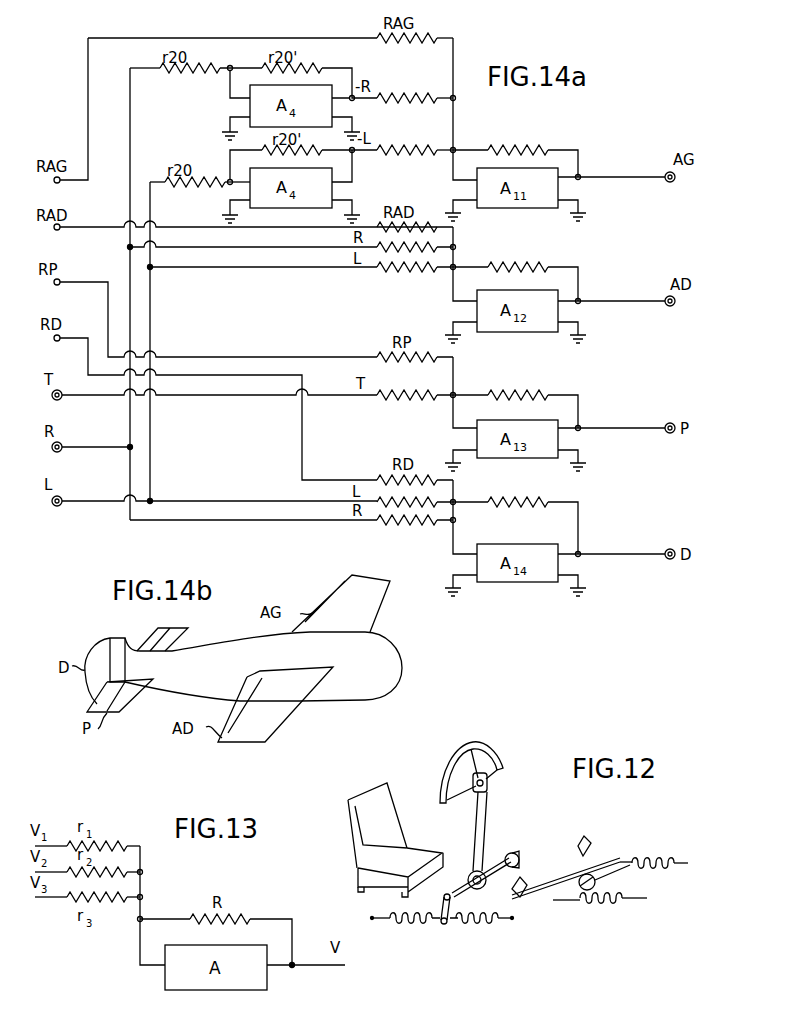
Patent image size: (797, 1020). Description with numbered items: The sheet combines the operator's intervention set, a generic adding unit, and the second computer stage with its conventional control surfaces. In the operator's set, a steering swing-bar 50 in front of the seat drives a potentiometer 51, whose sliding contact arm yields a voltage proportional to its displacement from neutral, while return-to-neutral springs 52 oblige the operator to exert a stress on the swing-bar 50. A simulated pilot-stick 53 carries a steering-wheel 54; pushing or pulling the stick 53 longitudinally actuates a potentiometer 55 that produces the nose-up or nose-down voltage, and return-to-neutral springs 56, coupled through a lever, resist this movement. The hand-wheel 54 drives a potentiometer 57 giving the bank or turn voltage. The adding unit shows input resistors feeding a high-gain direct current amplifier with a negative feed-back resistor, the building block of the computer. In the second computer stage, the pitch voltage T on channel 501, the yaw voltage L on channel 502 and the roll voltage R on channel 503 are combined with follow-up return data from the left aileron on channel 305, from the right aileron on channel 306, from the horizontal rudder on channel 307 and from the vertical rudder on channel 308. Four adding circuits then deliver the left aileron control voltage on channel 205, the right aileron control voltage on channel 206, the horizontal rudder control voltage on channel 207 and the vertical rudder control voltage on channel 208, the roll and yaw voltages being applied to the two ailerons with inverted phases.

In FIG. 14A, the left aileron control output channel 205 is at (616, 168).
In FIG. 14A, the right aileron control output channel 206 is at (616, 293).
In FIG. 14A, the horizontal rudder control output channel 207 is at (616, 418).
In FIG. 14A, the vertical rudder control output channel 208 is at (616, 545).
In FIG. 14A, the left aileron follow-up return channel 305 is at (76, 118).
In FIG. 14A, the right aileron follow-up return channel 306 is at (215, 236).
In FIG. 14A, the horizontal rudder follow-up return channel 307 is at (215, 318).
In FIG. 14A, the vertical rudder follow-up return channel 308 is at (215, 407).
In FIG. 14A, the pitch voltage channel 501 is at (214, 402).
In FIG. 14A, the yaw voltage channel 502 is at (214, 509).
In FIG. 14A, the roll voltage channel 503 is at (92, 456).
In FIG. 12, the steering swing-bar 50 is at (592, 838).
In FIG. 12, the potentiometer 51 is at (596, 882).
In FIG. 12, the return-to-neutral springs 52 is at (648, 856).
In FIG. 12, the simulated pilot-stick 53 is at (484, 814).
In FIG. 12, the steering-wheel 54 is at (440, 771).
In FIG. 12, the potentiometer 55 is at (518, 857).
In FIG. 12, the return-to-neutral springs 56 is at (422, 922).
In FIG. 12, the potentiometer 57 is at (489, 779).